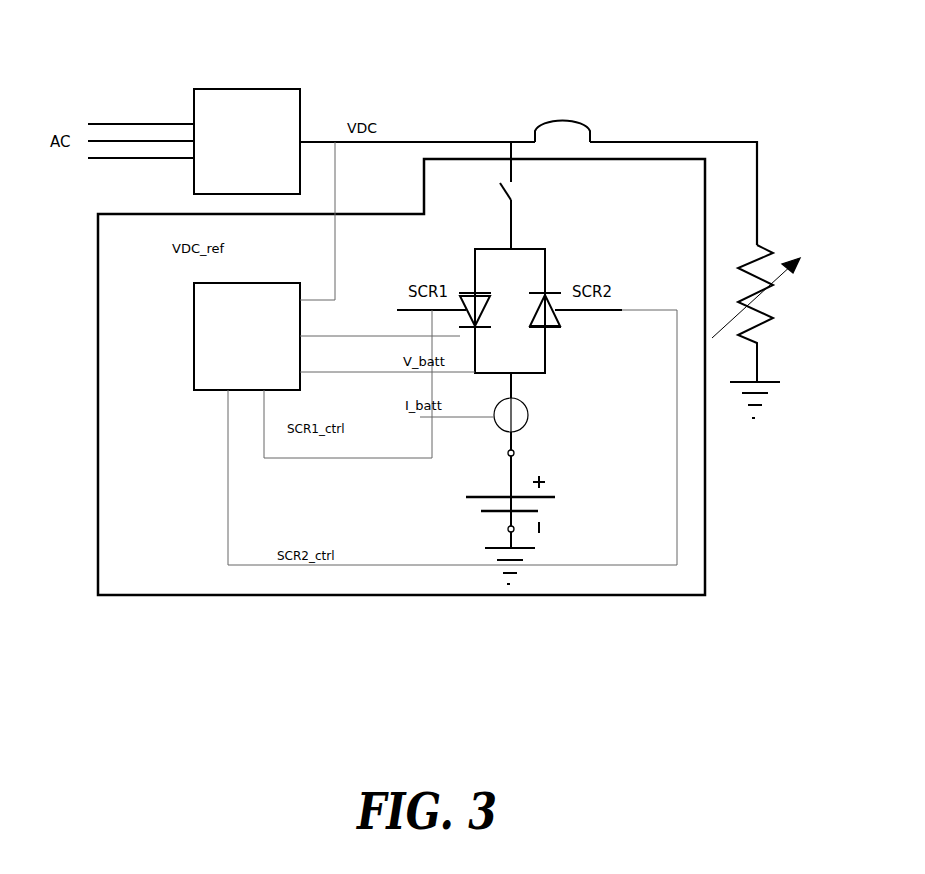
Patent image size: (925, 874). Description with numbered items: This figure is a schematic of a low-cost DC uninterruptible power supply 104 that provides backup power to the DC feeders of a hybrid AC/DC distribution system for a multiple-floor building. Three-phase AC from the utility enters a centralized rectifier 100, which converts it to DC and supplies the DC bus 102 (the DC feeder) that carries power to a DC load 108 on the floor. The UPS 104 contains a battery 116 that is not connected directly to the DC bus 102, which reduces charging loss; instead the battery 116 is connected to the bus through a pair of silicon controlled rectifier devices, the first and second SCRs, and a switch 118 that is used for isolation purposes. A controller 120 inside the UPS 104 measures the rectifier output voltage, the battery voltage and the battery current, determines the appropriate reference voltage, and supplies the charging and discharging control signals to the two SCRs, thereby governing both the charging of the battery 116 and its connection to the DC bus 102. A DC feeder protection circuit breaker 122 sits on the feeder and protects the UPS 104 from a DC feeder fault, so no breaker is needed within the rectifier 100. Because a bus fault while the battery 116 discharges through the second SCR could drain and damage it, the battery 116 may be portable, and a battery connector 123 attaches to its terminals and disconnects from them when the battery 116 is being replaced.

The rectifier 100 is at (245, 89).
The DC bus 102 is at (757, 167).
The DC uninterruptible power supply 104 is at (97, 401).
The DC load 108 is at (773, 253).
The battery 116 is at (485, 497).
The switch 118 is at (504, 197).
The controller 120 is at (194, 337).
The DC feeder protection circuit breaker 122 is at (545, 118).
The battery connector 123 is at (508, 453).